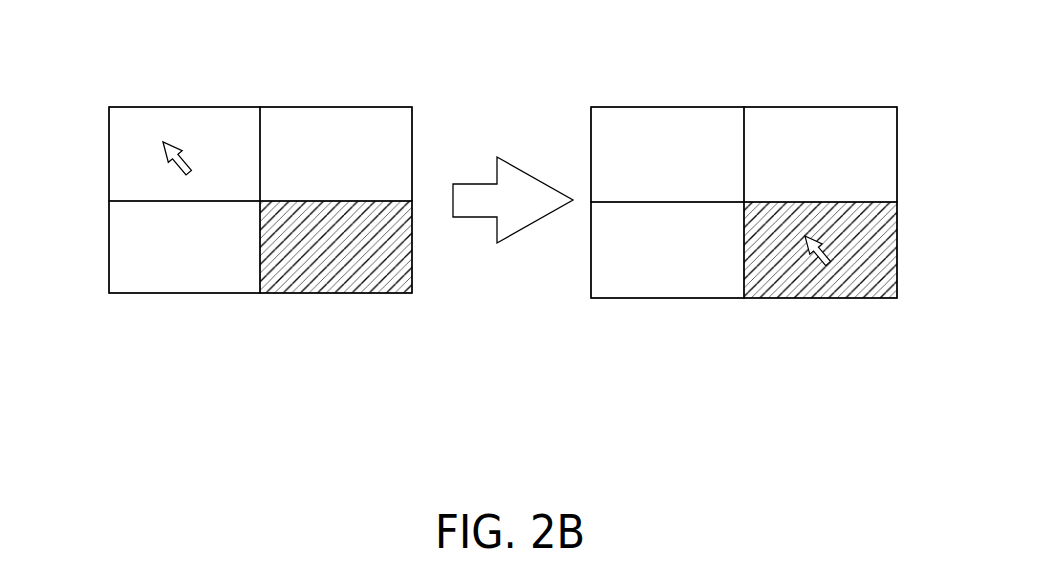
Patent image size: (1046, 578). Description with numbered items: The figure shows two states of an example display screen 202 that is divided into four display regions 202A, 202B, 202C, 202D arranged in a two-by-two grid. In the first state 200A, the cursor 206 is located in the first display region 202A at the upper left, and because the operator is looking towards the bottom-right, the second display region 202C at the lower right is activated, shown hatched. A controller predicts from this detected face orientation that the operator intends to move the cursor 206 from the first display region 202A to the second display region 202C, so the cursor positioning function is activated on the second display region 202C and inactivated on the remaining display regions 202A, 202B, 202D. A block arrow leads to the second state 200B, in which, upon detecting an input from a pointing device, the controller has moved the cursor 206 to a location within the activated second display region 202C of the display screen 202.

The first state 200A is at (352, 408).
The second state 200B is at (829, 410).
The display screen 202 is at (375, 107).
The first display region 202A is at (210, 135).
The display region 202B is at (329, 135).
The second display region 202C is at (332, 258).
The display region 202D is at (179, 258).
The cursor 206 is at (164, 160).